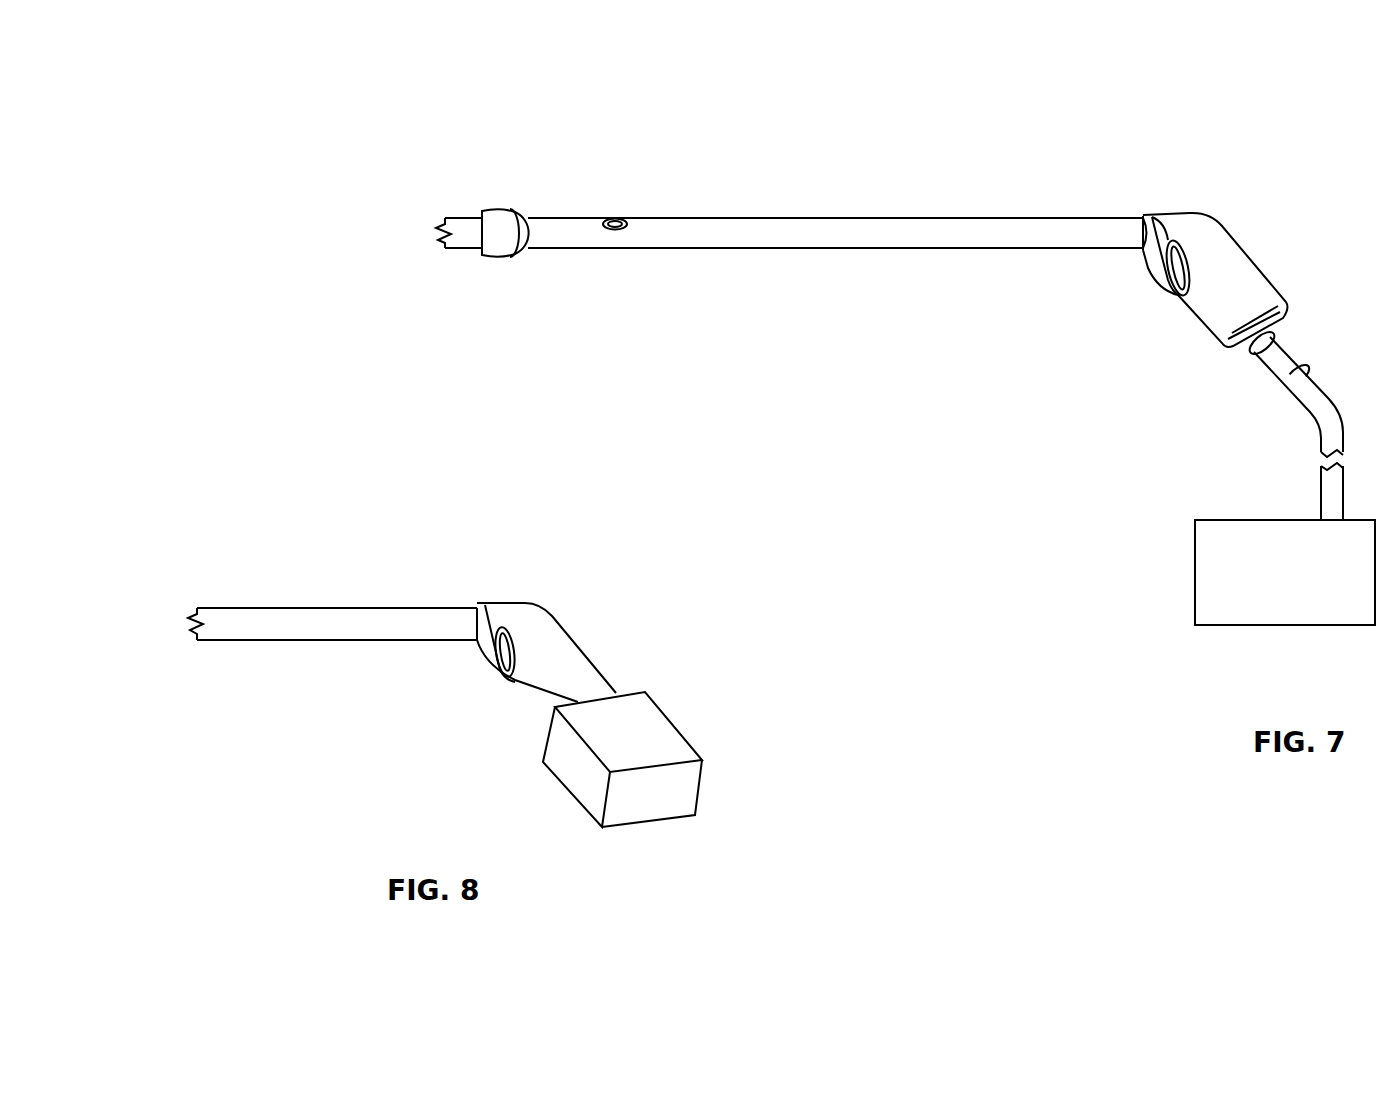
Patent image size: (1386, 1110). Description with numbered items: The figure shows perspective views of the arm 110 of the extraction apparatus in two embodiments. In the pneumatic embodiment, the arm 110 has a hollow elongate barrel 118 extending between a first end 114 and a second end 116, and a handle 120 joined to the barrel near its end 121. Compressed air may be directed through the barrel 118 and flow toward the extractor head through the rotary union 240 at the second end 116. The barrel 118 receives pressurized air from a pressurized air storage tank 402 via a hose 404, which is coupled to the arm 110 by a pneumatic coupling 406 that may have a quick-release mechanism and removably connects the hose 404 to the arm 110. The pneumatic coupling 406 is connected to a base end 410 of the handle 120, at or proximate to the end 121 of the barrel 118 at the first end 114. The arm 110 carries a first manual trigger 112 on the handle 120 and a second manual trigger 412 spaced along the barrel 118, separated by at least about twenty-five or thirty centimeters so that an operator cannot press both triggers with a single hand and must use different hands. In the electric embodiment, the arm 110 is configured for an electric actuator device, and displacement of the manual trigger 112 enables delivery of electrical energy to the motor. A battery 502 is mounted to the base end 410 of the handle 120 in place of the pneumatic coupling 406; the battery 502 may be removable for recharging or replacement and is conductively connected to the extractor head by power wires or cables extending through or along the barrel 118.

In FIG. 7, the arm 110 is at (840, 58).
In FIG. 8, the arm 110 is at (398, 520).
In FIG. 7, the first manual trigger 112 is at (1175, 295).
In FIG. 8, the first manual trigger 112 is at (506, 640).
In FIG. 7, the first end 114 is at (1294, 302).
In FIG. 7, the second end 116 is at (518, 204).
In FIG. 7, the barrel 118 is at (752, 222).
In FIG. 8, the barrel 118 is at (284, 620).
In FIG. 7, the handle 120 is at (1232, 272).
In FIG. 8, the handle 120 is at (550, 645).
In FIG. 7, the end of the barrel 121 is at (1138, 208).
In FIG. 7, the rotary union 240 is at (500, 216).
In FIG. 7, the pressurized air storage tank 402 is at (1195, 558).
In FIG. 7, the hose 404 is at (1312, 387).
In FIG. 7, the pneumatic coupling 406 is at (1285, 337).
In FIG. 7, the base end 410 is at (1243, 350).
In FIG. 8, the base end 410 is at (621, 688).
In FIG. 7, the second manual trigger 412 is at (616, 214).
In FIG. 8, the battery 502 is at (672, 740).